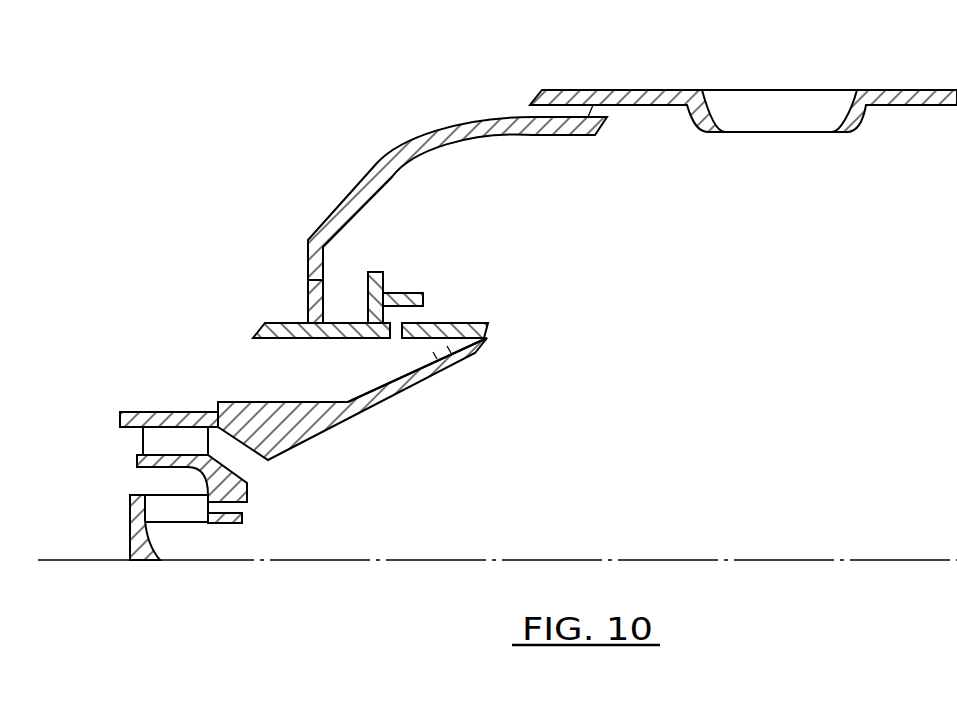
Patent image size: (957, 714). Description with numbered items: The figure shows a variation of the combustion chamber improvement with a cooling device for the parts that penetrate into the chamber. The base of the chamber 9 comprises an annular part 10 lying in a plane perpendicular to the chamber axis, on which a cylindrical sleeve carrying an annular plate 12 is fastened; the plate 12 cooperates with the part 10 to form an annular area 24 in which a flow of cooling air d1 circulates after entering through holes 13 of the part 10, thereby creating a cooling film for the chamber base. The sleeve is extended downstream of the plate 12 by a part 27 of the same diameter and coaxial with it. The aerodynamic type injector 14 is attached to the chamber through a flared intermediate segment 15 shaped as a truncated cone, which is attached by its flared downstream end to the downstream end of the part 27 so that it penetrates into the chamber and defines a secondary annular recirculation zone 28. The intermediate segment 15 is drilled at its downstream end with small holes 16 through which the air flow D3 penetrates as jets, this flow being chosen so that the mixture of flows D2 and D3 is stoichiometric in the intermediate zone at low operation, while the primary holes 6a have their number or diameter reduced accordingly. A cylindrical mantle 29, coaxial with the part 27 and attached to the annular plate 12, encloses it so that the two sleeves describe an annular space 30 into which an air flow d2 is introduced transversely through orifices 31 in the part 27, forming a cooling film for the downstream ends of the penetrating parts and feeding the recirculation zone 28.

The primary holes 6a is at (813, 130).
The chamber 9 is at (350, 163).
The annular part 10 is at (308, 248).
The holes 13 is at (308, 280).
The annular plate 12 is at (375, 273).
The cylindrical mantle 29 is at (410, 292).
The part 27 is at (487, 326).
The orifices 31 is at (372, 322).
The annular area 24 is at (352, 283).
The secondary annular recirculation zone 28 is at (402, 236).
The annular space 30 is at (425, 317).
The holes 16 is at (472, 352).
The intermediate segment 15 is at (390, 407).
The aerodynamic type injector 14 is at (132, 533).
The cooling air flow d1 is at (348, 283).
The air flow d2 is at (397, 312).
The air flow D2 is at (240, 455).
The air flow D3 is at (420, 347).